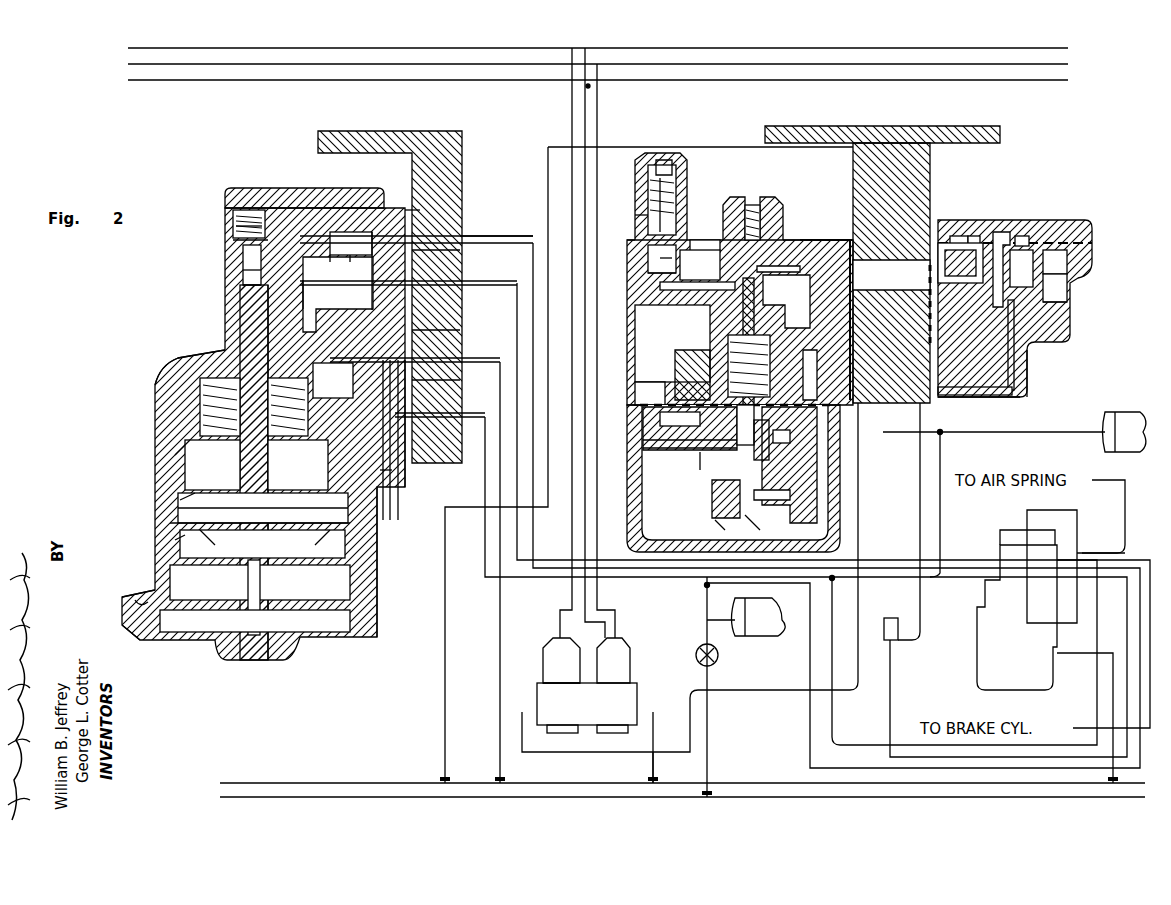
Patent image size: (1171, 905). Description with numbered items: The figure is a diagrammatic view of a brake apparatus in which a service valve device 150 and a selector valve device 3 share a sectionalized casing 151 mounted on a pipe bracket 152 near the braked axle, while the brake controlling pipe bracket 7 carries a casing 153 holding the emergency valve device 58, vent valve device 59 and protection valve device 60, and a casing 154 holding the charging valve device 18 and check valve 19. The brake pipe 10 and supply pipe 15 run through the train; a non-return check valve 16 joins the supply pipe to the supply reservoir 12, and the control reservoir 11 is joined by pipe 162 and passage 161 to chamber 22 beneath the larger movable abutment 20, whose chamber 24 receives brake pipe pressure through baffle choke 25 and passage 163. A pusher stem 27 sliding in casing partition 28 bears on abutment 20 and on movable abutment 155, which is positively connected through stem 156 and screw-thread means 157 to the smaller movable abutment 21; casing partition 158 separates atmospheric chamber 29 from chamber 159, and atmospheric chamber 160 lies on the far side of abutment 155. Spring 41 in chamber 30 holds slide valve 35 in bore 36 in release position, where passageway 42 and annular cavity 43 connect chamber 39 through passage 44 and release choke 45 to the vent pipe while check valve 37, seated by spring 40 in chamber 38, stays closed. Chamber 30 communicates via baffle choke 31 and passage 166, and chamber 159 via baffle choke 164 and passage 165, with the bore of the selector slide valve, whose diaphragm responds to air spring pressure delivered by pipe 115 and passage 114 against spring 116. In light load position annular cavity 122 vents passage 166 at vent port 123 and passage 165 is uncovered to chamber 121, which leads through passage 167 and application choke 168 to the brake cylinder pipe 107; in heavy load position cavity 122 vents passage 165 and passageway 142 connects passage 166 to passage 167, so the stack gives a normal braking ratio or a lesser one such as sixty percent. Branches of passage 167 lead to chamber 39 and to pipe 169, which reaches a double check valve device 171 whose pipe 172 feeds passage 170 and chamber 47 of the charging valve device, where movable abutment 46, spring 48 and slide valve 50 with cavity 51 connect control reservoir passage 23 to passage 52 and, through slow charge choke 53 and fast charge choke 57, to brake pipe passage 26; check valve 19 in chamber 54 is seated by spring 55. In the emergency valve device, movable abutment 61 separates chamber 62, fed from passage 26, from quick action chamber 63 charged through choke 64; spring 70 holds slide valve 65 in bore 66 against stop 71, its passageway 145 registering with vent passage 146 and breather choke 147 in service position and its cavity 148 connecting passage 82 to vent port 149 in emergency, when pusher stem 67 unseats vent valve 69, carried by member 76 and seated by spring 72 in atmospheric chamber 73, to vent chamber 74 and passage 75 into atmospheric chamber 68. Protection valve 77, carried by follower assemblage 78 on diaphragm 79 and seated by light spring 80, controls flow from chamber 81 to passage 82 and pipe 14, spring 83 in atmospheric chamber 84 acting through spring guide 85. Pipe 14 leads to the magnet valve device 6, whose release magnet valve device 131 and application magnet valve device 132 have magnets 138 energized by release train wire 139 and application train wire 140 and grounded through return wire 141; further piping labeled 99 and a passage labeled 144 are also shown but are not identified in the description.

The selector valve device 3 is at (300, 186).
The application and release magnet valve device 6 is at (545, 663).
The pipe bracket 7 is at (918, 192).
The brake pipe 10 is at (445, 768).
The control reservoir 11 is at (1140, 415).
The supply reservoir 12 is at (775, 637).
The pipe 14 is at (590, 752).
The supply pipe 15 is at (707, 770).
The non-return check valve 16 is at (716, 662).
The charging valve device 18 is at (1070, 215).
The check valve 19 is at (1003, 232).
The movable abutment 20 is at (130, 603).
The movable abutment 21 is at (208, 445).
The chamber 22 is at (170, 628).
The passage 23 is at (702, 256).
The chamber 24 is at (377, 583).
The baffle choke 25 is at (395, 470).
The brake pipe passage 26 is at (840, 378).
The pusher stem 27 is at (262, 580).
The casing partition 28 is at (208, 568).
The atmospheric chamber 29 is at (190, 477).
The chamber 30 is at (200, 392).
The baffle choke 31 is at (340, 468).
The slide valve 35 is at (240, 312).
The bore 36 is at (240, 340).
The check valve 37 is at (233, 241).
The chamber 38 is at (233, 226).
The chamber 39 is at (243, 258).
The helical bias spring 40 is at (233, 216).
The helical bias spring 41 is at (308, 390).
The passageway 42 is at (245, 290).
The annular cavity 43 is at (243, 276).
The passage 44 is at (316, 320).
The brake cylinder release control choke 45 is at (350, 292).
The movable abutment 46 is at (1080, 228).
The chamber 47 is at (1022, 236).
The helical bias spring 48 is at (1067, 260).
The slide valve 50 is at (1068, 305).
The annular cavity 51 is at (1070, 284).
The passage 52 is at (1026, 290).
The control reservoir slow charge and overcharge dissipation choke 53 is at (945, 305).
The chamber 54 is at (960, 236).
The helical bias spring 55 is at (972, 236).
The control reservoir fast charge choke 57 is at (930, 282).
The emergency valve device 58 is at (622, 498).
The vent valve device 59 is at (775, 205).
The protection valve device 60 is at (632, 168).
The movable abutment 61 is at (705, 375).
The chamber 62 is at (690, 380).
The quick action chamber 63 is at (642, 520).
The charging choke 64 is at (660, 407).
The slide valve 65 is at (765, 500).
The bore 66 is at (743, 425).
The pusher stem 67 is at (743, 316).
The atmospheric chamber 68 is at (758, 274).
The vent valve 69 is at (790, 232).
The helical bias spring 70 is at (728, 342).
The stop 71 is at (760, 525).
The helical bias spring 72 is at (765, 200).
The atmospheric chamber 73 is at (736, 200).
The chamber 74 is at (710, 240).
The passage 75 is at (810, 312).
The member 76 is at (762, 215).
The protection valve 77 is at (648, 270).
The diaphragm follower assemblage 78 is at (636, 216).
The annular flexible diaphragm 79 is at (640, 228).
The light helical bias spring 80 is at (655, 262).
The chamber 81 is at (648, 258).
The passage 82 is at (695, 300).
The helical bias spring 83 is at (675, 168).
The atmospheric chamber 84 is at (676, 195).
The spring guide 85 is at (650, 190).
The pipe 99 is at (533, 243).
The brake cylinder pipe 107 is at (480, 246).
The passage 114 is at (420, 248).
The pipe 115 is at (460, 252).
The helical bias spring 116 is at (362, 222).
The chamber 121 is at (330, 270).
The annular cavity 122 is at (342, 252).
The atmospheric vent port 123 is at (355, 270).
The release magnet valve device 131 is at (545, 650).
The application magnet valve device 132 is at (645, 655).
The magnet 138 is at (632, 650).
The release train wire 139 is at (572, 52).
The application train wire 140 is at (597, 66).
The return wire 141 is at (590, 87).
The valve passageway 142 is at (303, 312).
The passage 144 is at (450, 250).
The passageway 145 is at (765, 435).
The vent passage 146 is at (700, 460).
The breather choke 147 is at (642, 452).
The annular cavity 148 is at (712, 490).
The atmospheric vent port 149 is at (720, 520).
The service valve device 150 is at (155, 412).
The sectionalized casing 151 is at (168, 362).
The pipe bracket 152 is at (462, 160).
The sectionalized casing 153 is at (830, 243).
The casing 154 is at (1014, 390).
The movable abutment 155 is at (175, 523).
The stem 156 is at (262, 500).
The screw-thread connecting means 157 is at (262, 541).
The casing partition 158 is at (190, 493).
The chamber 159 is at (185, 502).
The atmospheric chamber 160 is at (180, 541).
The passage 161 is at (378, 545).
The pipe 162 is at (495, 545).
The passage 163 is at (424, 368).
The baffle choke 164 is at (395, 488).
The passage 165 is at (420, 330).
The passage 166 is at (340, 375).
The passage 167 is at (372, 280).
The brake cylinder application choke 168 is at (416, 256).
The pipe 169 is at (492, 352).
The passage 170 is at (1014, 360).
The double check valve device 171 is at (896, 640).
The pipe 172 is at (920, 518).